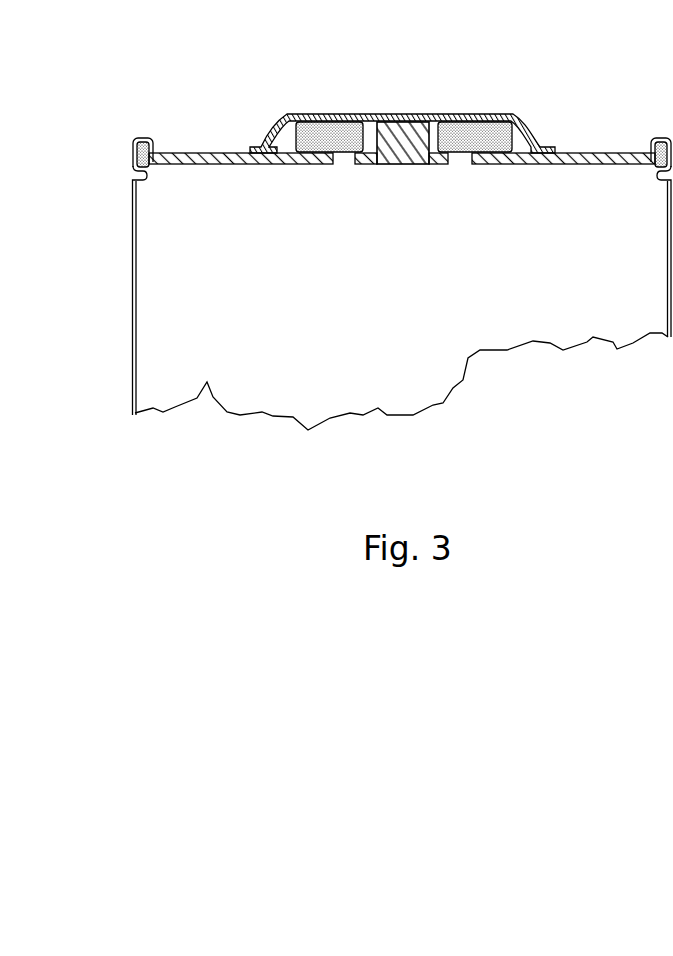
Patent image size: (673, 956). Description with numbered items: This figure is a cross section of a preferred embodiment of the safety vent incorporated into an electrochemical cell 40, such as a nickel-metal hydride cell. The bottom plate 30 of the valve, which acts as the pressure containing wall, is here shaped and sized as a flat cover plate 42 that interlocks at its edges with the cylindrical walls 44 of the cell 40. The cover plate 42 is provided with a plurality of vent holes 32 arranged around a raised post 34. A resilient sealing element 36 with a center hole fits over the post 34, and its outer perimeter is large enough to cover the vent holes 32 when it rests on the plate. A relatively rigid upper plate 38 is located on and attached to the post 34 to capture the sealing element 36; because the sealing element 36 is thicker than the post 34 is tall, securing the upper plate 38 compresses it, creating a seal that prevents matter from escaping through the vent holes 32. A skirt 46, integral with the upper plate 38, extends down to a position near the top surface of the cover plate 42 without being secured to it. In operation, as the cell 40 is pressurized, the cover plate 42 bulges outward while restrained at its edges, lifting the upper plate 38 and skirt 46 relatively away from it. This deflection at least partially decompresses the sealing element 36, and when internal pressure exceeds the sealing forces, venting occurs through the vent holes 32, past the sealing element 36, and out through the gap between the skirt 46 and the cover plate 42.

The bottom plate 30 is at (13, 584).
The vent holes 32 is at (342, 165).
The raised post 34 is at (417, 121).
The resilient sealing element 36 is at (480, 122).
The upper plate 38 is at (361, 121).
The electrochemical cell 40 is at (86, 320).
The cover plate 42 is at (183, 153).
The cylindrical walls 44 is at (133, 224).
The skirt 46 is at (262, 146).